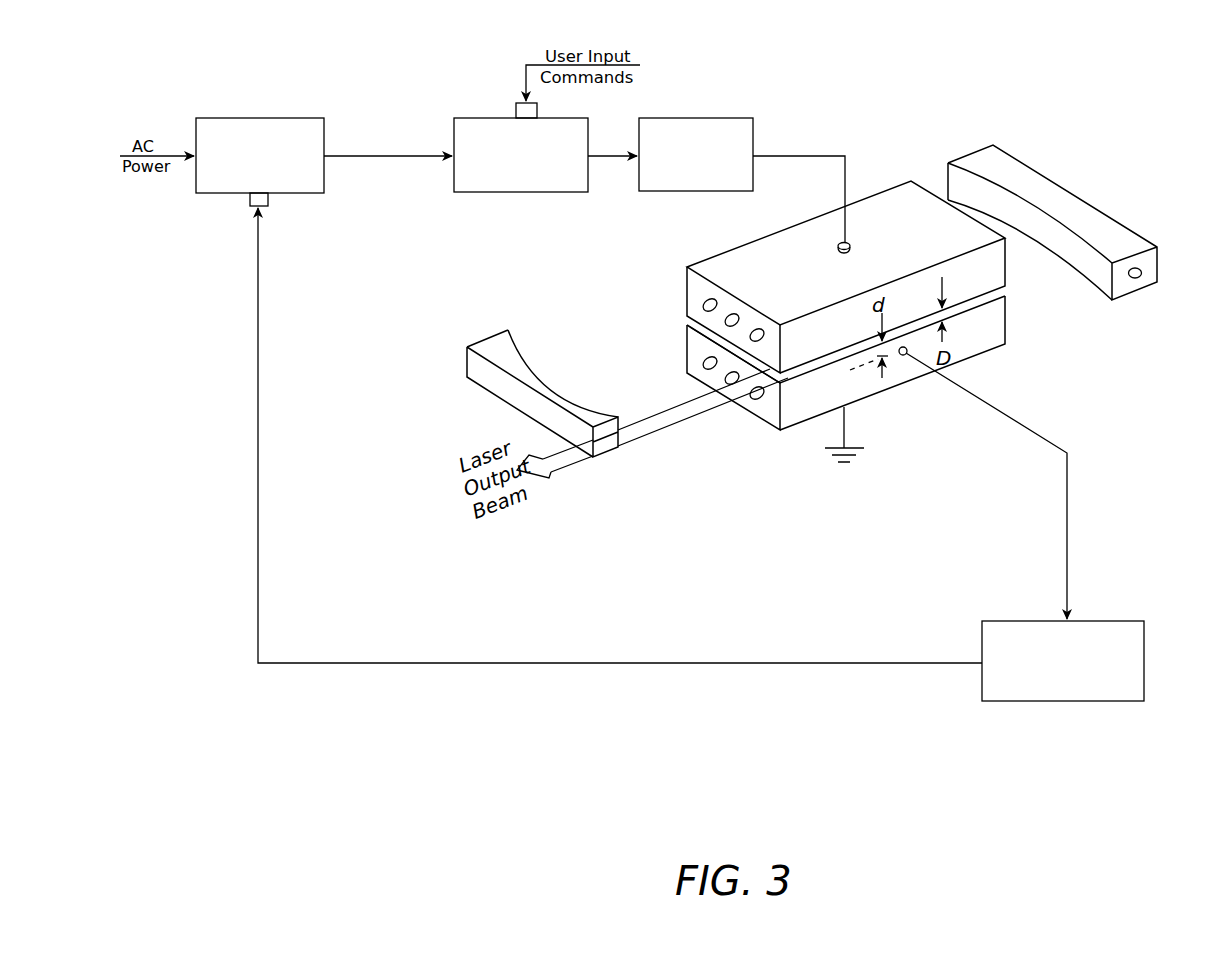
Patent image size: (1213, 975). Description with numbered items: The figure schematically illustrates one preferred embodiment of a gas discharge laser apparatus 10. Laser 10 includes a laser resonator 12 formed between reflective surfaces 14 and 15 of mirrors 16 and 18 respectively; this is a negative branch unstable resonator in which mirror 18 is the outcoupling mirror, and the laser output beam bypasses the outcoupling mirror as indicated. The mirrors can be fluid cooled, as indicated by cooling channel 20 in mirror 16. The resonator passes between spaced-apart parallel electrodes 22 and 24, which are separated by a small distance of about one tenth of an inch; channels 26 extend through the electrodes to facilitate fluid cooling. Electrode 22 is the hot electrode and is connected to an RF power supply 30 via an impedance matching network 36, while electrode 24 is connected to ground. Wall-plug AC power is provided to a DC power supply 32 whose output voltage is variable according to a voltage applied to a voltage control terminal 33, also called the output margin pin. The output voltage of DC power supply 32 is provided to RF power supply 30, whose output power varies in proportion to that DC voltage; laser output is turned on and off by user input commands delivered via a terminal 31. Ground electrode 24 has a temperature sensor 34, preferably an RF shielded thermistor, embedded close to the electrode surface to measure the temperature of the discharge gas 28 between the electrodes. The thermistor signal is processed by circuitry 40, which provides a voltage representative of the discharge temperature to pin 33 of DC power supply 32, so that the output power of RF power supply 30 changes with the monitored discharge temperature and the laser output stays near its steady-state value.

The gas discharge laser apparatus 10 is at (852, 762).
The laser resonator 12 is at (838, 304).
The reflective surface 14 is at (1092, 268).
The reflective surface 15 is at (529, 350).
The mirror 16 is at (1062, 239).
The mirror 18 is at (511, 374).
The cooling channel 20 is at (1139, 278).
The electrode 22 is at (813, 253).
The electrode 24 is at (989, 360).
The channels 26 is at (706, 361).
The discharge gas 28 is at (806, 366).
The RF power supply 30 is at (500, 196).
The terminal 31 is at (516, 108).
The DC power supply 32 is at (304, 198).
The voltage control terminal 33 is at (250, 205).
The temperature sensor 34 is at (901, 355).
The impedance matching network 36 is at (723, 118).
The circuitry 40 is at (1020, 618).